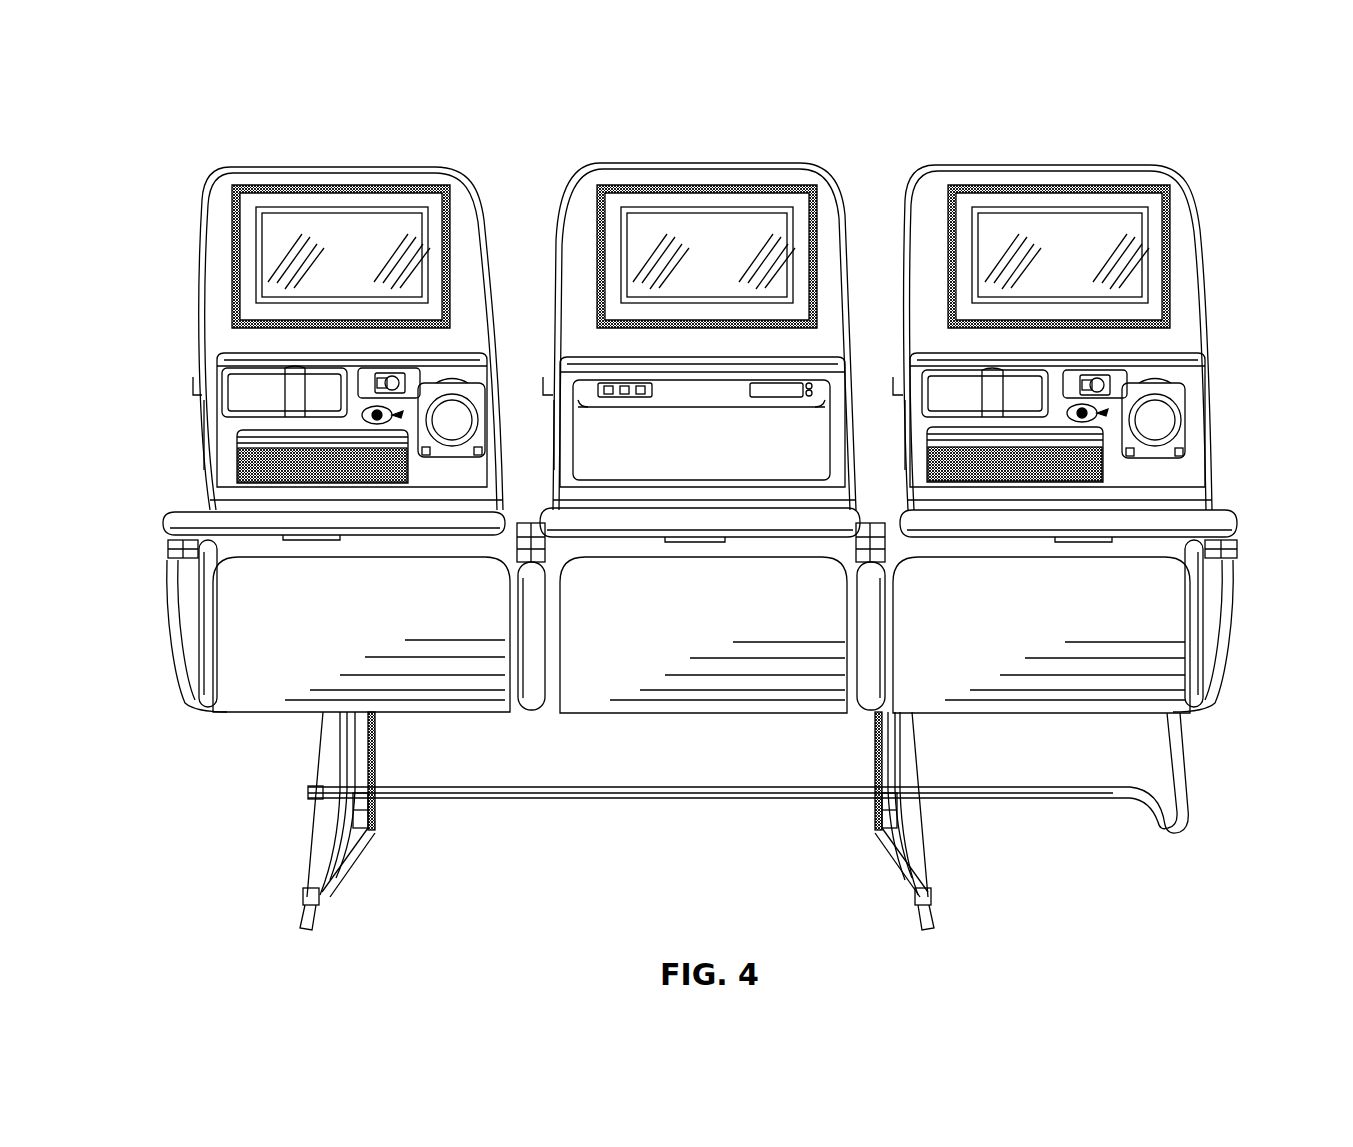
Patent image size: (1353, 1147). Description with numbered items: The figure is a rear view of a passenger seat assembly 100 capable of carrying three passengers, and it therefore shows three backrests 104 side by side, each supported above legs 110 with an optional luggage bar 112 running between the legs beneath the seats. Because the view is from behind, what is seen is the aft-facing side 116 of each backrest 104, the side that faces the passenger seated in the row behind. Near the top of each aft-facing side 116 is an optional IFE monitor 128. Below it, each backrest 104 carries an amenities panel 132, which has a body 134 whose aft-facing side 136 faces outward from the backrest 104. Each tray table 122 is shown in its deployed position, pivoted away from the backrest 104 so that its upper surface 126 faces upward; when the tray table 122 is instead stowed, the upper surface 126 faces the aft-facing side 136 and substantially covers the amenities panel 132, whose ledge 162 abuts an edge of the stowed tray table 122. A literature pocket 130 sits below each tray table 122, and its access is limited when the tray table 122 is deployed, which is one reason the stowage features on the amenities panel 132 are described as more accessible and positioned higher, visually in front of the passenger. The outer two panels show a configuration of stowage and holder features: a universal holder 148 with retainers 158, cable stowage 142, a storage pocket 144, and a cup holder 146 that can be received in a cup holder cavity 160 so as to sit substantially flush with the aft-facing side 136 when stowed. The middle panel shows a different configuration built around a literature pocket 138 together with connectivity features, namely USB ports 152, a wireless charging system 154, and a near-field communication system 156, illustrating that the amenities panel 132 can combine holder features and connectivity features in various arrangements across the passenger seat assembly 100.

The passenger seat assembly 100 is at (1208, 98).
The backrest 104 is at (378, 177).
The legs 110 is at (352, 863).
The luggage bar 112 is at (682, 795).
The aft-facing side 116 is at (455, 200).
The tray table 122 is at (177, 533).
The upper surface 126 is at (180, 522).
The IFE monitor 128 is at (322, 205).
The literature pocket 130 is at (262, 562).
The amenities panel 132 is at (207, 405).
The body 134 is at (227, 445).
The aft-facing side 136 is at (478, 470).
The literature pocket 138 is at (697, 410).
The cable stowage 142 is at (393, 377).
The storage pocket 144 is at (345, 480).
The cup holder 146 is at (445, 460).
The universal holder 148 is at (255, 397).
The USB ports 152 is at (622, 398).
The wireless charging system 154 is at (392, 480).
The near-field communication (NFC) system 156 is at (790, 400).
The retainer 158 is at (285, 372).
The cup holder cavity 160 is at (1170, 388).
The ledge 162 is at (372, 362).